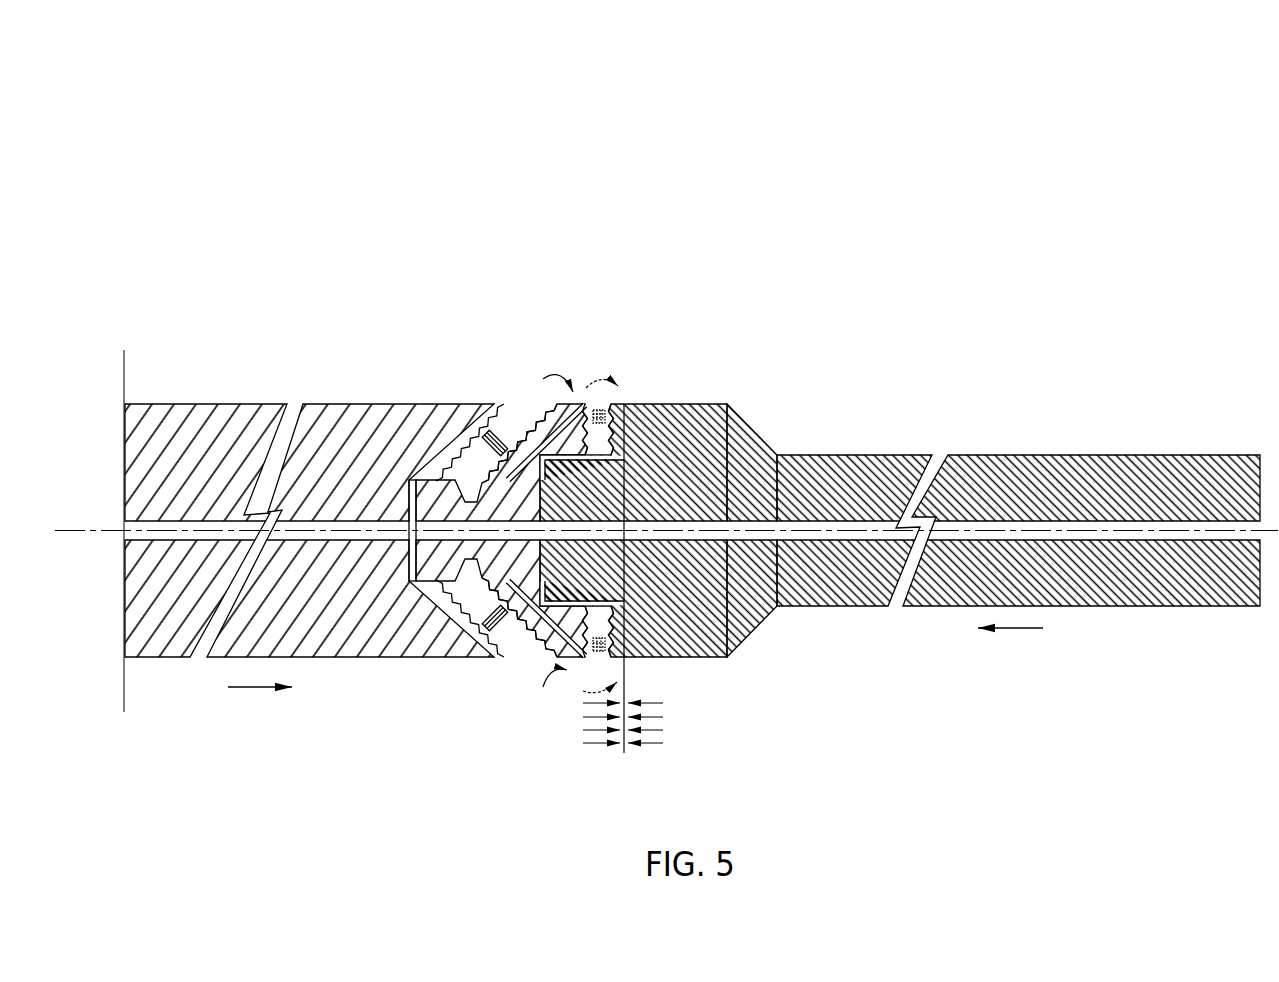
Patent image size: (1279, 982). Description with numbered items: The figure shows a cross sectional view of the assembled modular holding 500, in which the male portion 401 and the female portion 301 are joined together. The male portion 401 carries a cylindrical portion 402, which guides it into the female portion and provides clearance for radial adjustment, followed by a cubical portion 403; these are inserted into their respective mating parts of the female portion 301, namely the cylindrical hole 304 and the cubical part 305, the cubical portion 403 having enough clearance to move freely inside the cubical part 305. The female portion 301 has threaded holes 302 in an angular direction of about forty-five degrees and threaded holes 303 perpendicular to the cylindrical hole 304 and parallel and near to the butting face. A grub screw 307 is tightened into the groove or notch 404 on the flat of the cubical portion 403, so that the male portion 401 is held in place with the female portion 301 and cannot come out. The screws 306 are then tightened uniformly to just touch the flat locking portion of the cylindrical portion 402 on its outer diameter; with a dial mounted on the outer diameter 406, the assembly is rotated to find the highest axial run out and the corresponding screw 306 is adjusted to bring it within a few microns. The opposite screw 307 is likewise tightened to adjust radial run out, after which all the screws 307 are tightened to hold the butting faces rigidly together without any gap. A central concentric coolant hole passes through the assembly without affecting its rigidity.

The modular holding 500 is at (352, 137).
The female portion 301 is at (345, 470).
The threaded hole 302 is at (504, 403).
The threaded hole 303 is at (615, 402).
The cylindrical hole 304 is at (556, 613).
The cubical part 305 is at (481, 629).
The screw 306 is at (601, 405).
The grub screw 307 is at (512, 428).
The male portion 401 is at (886, 477).
The cylindrical portion 402 is at (597, 481).
The cubical portion 403 is at (434, 480).
The notch 404 is at (472, 478).
The OD of the male portion 406 is at (704, 444).